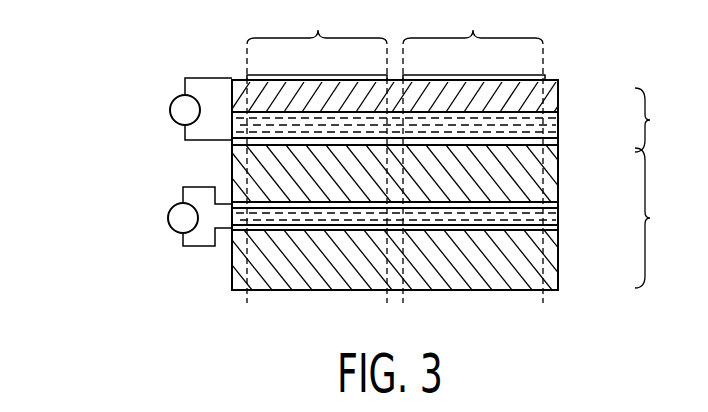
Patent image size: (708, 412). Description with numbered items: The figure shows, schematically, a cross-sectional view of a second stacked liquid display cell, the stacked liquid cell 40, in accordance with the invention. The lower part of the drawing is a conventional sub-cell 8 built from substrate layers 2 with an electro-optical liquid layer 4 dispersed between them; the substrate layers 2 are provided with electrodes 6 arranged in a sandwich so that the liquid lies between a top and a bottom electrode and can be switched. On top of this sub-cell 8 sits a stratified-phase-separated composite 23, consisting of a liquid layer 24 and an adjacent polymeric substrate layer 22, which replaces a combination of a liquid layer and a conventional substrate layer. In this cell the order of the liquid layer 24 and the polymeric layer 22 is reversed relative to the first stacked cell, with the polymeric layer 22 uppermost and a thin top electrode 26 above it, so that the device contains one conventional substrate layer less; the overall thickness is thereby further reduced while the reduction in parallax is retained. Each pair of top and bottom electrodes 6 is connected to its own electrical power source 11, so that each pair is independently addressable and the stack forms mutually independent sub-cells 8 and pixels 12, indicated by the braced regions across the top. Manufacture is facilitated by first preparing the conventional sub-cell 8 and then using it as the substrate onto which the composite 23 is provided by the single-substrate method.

The stacked liquid cell 40 is at (110, 96).
The pixels 12 is at (395, 153).
The electrical power source 11 is at (170, 108).
The top transparent electrode 26 is at (543, 76).
The polymeric substrate layer 22 is at (550, 98).
The liquid layer 24 is at (553, 126).
The stratified-phase-separated composite 23 is at (657, 120).
The electrodes 6 is at (556, 148).
The substrate layers 2 is at (538, 178).
The electro-optical liquid layers 4 is at (553, 218).
The sub-cell 8 is at (652, 218).